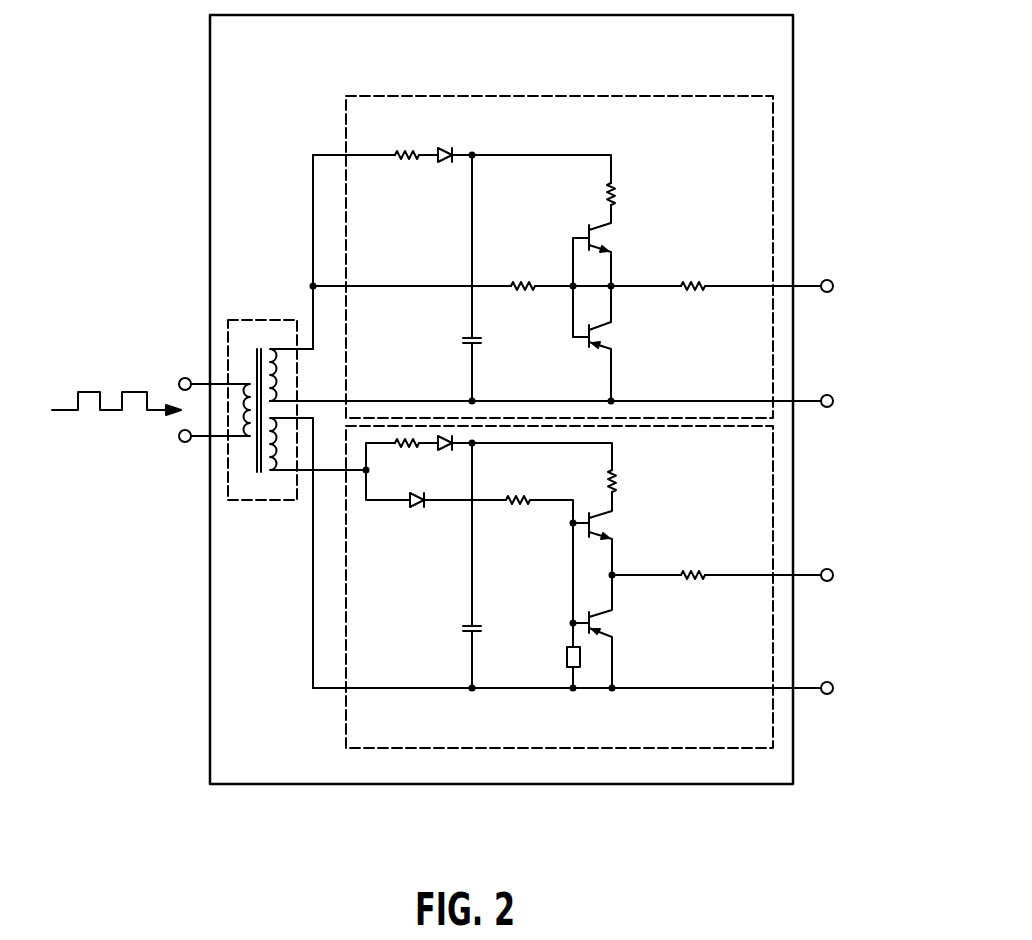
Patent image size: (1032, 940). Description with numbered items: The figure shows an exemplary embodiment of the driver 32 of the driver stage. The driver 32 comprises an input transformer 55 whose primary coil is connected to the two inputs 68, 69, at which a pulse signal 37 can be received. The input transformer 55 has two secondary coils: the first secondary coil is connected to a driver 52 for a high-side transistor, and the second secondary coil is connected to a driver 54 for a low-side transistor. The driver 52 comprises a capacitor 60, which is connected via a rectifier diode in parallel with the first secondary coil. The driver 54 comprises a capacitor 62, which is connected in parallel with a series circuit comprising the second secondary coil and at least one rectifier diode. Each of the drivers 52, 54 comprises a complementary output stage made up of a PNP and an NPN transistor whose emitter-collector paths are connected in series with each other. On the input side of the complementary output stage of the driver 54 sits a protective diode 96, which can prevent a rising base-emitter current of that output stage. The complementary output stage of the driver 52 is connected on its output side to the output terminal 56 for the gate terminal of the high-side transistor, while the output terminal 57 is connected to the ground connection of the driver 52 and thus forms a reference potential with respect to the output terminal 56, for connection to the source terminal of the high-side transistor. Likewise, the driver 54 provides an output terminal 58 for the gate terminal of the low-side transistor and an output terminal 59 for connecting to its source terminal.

The driver 32 is at (612, 785).
The pulse signal 37 is at (82, 390).
The driver for a high-side transistor 52 is at (563, 257).
The driver for a low-side transistor 54 is at (584, 590).
The input transformer 55 is at (257, 501).
The output terminal 56 is at (833, 284).
The output terminal 57 is at (833, 399).
The output terminal 58 is at (833, 573).
The output terminal 59 is at (833, 686).
The capacitor 60 is at (463, 340).
The capacitor 62 is at (463, 630).
The input 68 is at (186, 374).
The input 69 is at (185, 444).
The protective diode 96 is at (417, 508).